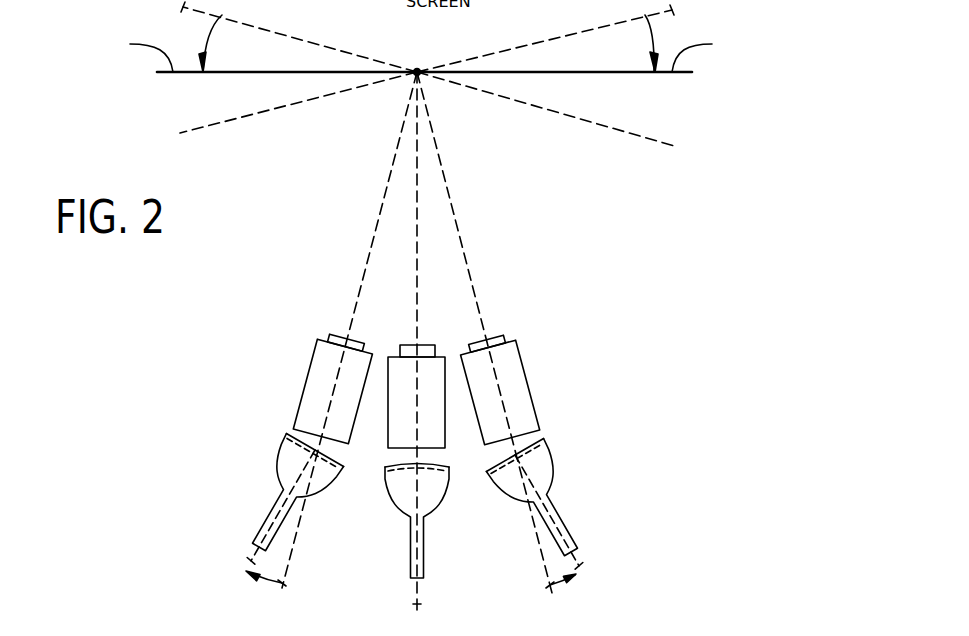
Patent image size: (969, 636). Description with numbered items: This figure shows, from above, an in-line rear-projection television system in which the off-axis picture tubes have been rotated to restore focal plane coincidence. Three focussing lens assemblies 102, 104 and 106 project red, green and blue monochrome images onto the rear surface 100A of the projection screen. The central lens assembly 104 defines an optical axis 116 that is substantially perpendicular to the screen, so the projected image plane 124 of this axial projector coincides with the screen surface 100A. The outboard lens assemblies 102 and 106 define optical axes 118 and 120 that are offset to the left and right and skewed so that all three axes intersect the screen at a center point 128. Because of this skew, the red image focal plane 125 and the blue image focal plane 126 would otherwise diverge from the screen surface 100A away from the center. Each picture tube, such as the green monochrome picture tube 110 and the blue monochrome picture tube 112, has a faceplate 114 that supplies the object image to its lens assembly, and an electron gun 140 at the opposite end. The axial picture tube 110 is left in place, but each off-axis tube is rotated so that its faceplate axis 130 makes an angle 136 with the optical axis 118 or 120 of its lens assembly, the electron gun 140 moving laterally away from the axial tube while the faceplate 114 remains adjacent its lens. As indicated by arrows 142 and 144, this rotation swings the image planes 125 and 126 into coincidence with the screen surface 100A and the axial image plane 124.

The rear surface of the projection screen 100A is at (253, 73).
The projected image plane 124 is at (605, 74).
The red image focal plane 125 is at (182, 11).
The blue image focal plane 126 is at (671, 12).
The center point 128 is at (415, 75).
The arrow 142 is at (207, 43).
The arrow 144 is at (652, 43).
The optical axis 116 is at (416, 250).
The optical axis 118 is at (380, 209).
The optical axis 120 is at (460, 237).
The focussing lens assembly 102 is at (313, 372).
The focussing lens assembly 104 is at (388, 440).
The focussing lens assembly 106 is at (528, 380).
The faceplate 114 is at (288, 434).
The green monochrome picture tube 110 is at (424, 551).
The blue monochrome picture tube 112 is at (575, 514).
The electron gun 140 is at (280, 540).
The faceplate axis 130 is at (250, 556).
The angle 136 is at (263, 585).